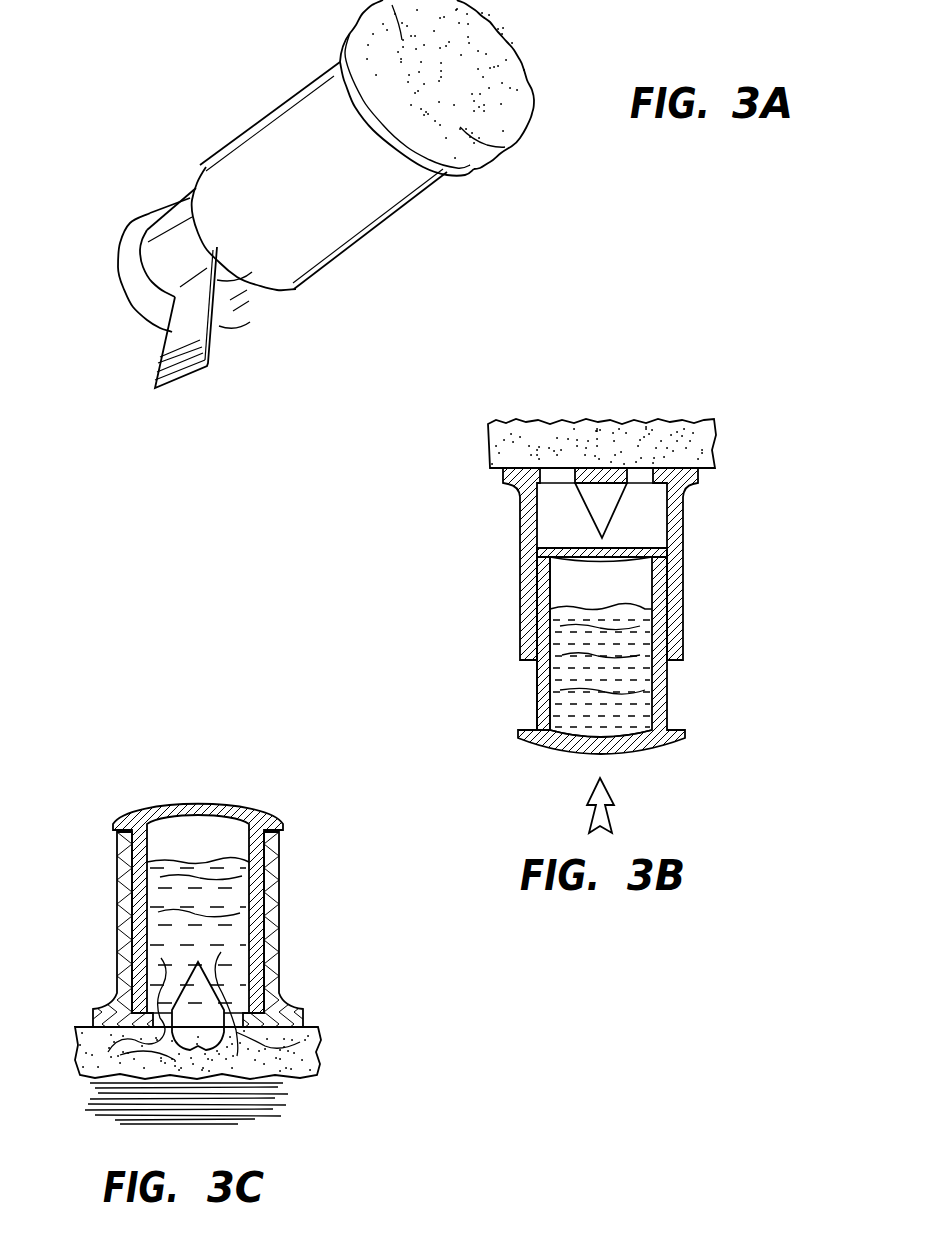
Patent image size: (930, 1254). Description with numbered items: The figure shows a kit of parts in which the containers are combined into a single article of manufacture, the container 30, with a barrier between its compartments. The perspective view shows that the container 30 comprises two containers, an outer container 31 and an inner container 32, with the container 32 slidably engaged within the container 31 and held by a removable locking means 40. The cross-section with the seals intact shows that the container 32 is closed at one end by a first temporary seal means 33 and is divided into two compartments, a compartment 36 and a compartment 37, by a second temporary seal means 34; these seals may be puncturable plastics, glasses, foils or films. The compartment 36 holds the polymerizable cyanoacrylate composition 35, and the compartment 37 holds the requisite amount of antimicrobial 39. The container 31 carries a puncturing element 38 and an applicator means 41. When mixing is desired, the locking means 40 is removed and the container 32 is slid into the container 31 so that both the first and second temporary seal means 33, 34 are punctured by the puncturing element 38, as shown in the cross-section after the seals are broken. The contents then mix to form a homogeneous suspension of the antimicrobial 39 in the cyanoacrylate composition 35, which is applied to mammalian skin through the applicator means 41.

In FIG. 3A, the container 30 is at (268, 61).
In FIG. 3A, the container 31 is at (208, 166).
In FIG. 3B, the container 31 is at (669, 548).
In FIG. 3A, the container 32 is at (122, 237).
In FIG. 3B, the container 32 is at (630, 655).
In FIG. 3B, the first temporary seal means 33 is at (580, 548).
In FIG. 3B, the second temporary seal means 34 is at (675, 585).
In FIG. 3B, the polymerizable cyanoacrylate composition 35 is at (575, 703).
In FIG. 3B, the compartment 36 is at (567, 670).
In FIG. 3B, the compartment 37 is at (545, 566).
In FIG. 3B, the puncturing element 38 is at (603, 536).
In FIG. 3B, the antimicrobial 39 is at (612, 560).
In FIG. 3A, the locking means 40 is at (148, 367).
In FIG. 3A, the applicator means 41 is at (503, 53).
In FIG. 3B, the applicator means 41 is at (713, 424).